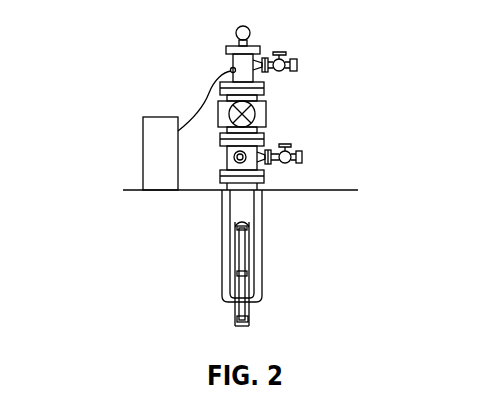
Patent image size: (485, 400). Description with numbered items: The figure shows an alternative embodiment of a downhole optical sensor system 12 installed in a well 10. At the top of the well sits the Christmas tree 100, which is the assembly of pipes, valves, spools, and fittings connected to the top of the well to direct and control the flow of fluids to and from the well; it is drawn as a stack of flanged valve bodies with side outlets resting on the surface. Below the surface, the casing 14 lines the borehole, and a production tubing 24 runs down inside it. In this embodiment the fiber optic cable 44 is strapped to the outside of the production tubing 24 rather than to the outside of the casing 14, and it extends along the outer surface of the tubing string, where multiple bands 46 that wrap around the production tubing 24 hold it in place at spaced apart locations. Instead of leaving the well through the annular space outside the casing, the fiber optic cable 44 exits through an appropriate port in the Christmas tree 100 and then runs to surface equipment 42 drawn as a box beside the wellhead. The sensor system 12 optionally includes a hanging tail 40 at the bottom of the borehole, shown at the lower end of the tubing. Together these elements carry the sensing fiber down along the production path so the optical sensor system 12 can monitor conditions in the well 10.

The well 10 is at (166, 32).
The downhole optical sensor system 12 is at (123, 66).
The casing 14 is at (259, 217).
The production tubing 24 is at (250, 316).
The hanging tail 40 is at (235, 327).
The control unit 42 is at (143, 152).
The fiber optic cable 44 is at (206, 94).
The bands 46 is at (249, 229).
The Christmas tree 100 is at (214, 106).